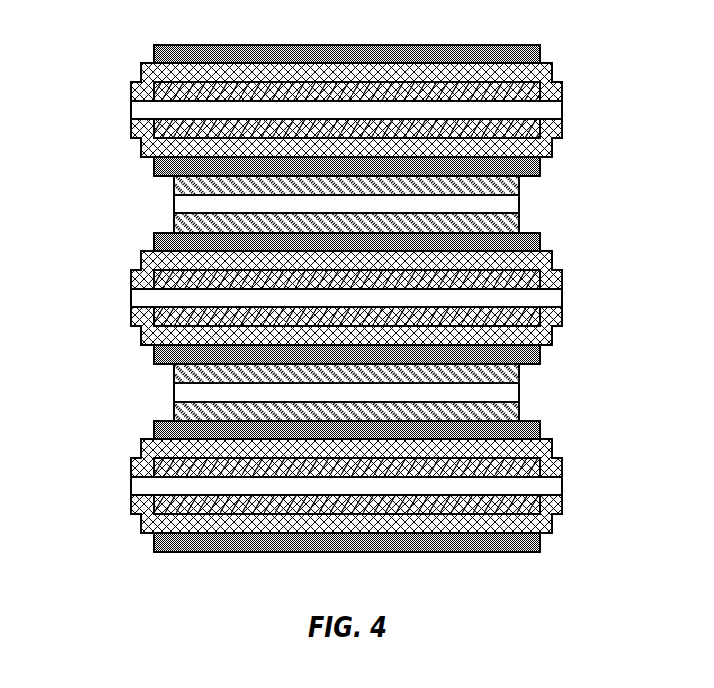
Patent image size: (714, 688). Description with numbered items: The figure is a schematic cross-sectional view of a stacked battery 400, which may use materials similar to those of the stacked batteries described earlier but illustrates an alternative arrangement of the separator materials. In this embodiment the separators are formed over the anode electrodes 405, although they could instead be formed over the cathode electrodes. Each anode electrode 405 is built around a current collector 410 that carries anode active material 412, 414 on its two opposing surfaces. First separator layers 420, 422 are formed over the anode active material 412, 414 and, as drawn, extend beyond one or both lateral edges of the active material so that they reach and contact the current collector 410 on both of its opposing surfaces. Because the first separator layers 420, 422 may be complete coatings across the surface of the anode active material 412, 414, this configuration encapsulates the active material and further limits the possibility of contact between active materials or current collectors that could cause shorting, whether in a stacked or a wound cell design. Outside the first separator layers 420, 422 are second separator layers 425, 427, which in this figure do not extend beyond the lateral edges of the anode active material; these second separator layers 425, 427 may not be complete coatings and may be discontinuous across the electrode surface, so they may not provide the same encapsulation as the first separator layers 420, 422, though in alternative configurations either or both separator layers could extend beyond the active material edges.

The stacked battery 400 is at (78, 75).
The anode electrode 405 is at (155, 234).
The current collector 410 is at (562, 298).
The anode active material 412 is at (143, 277).
The anode active material 414 is at (143, 318).
The first separator layer 420 is at (557, 270).
The first separator layer 422 is at (562, 318).
The second separator layer 425 is at (541, 235).
The second separator layer 427 is at (541, 358).